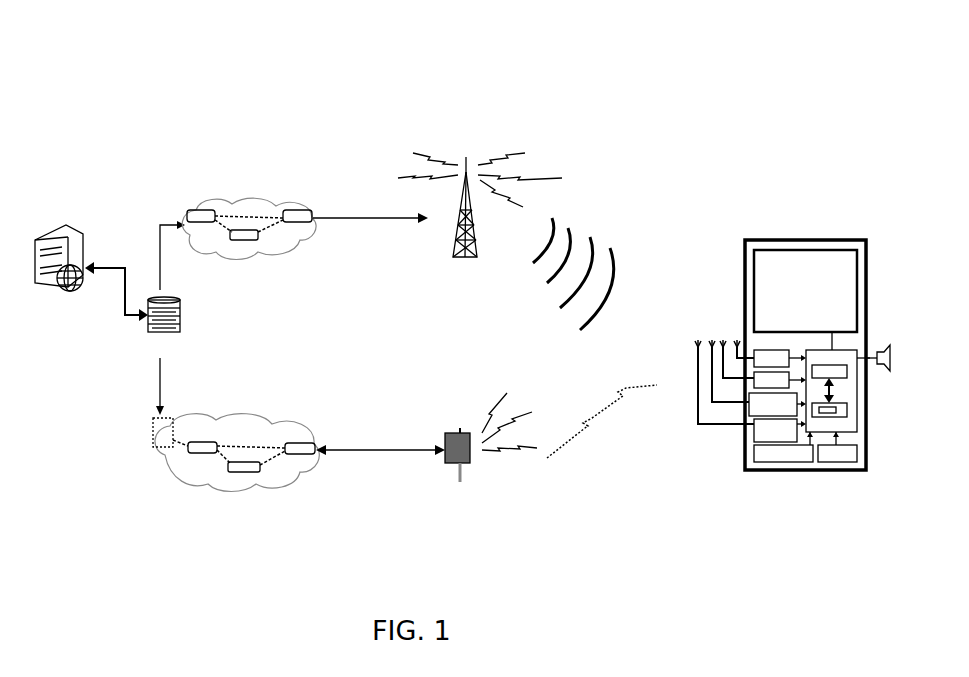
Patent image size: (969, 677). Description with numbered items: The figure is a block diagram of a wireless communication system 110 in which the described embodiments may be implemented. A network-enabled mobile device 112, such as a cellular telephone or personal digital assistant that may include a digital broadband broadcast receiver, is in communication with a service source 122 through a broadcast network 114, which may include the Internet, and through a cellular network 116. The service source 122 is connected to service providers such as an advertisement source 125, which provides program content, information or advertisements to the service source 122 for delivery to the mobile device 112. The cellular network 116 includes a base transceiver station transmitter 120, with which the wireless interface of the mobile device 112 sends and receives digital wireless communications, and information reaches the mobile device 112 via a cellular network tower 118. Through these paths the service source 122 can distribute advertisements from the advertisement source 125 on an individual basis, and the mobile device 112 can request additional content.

The wireless communication system 110 is at (455, 72).
The mobile device 112 is at (780, 471).
The broadcast network 114 is at (272, 218).
The cellular network 116 is at (278, 468).
The cellular network tower 118 is at (478, 165).
The base transceiver station transmitter 120 is at (462, 458).
The service source 122 is at (170, 333).
The advertisement source 125 is at (83, 235).